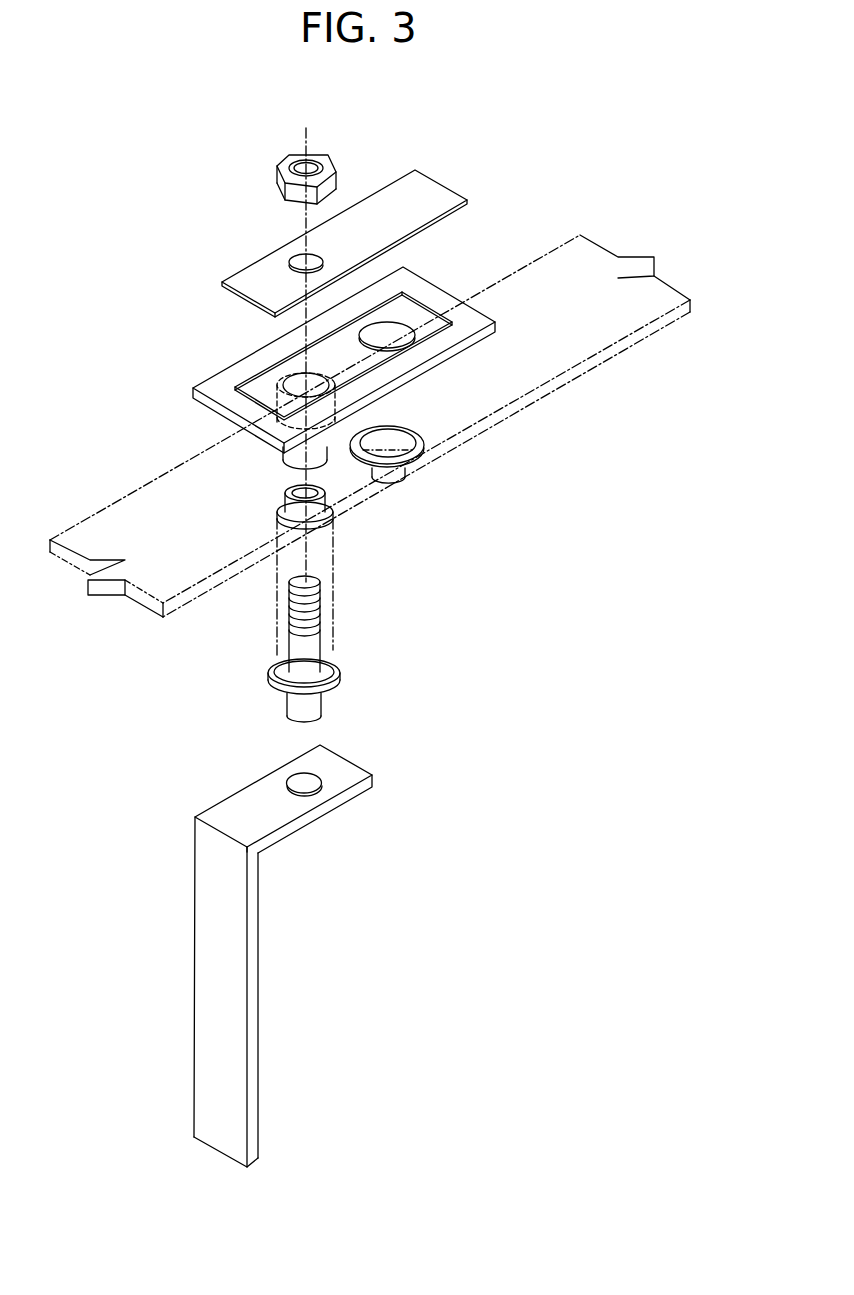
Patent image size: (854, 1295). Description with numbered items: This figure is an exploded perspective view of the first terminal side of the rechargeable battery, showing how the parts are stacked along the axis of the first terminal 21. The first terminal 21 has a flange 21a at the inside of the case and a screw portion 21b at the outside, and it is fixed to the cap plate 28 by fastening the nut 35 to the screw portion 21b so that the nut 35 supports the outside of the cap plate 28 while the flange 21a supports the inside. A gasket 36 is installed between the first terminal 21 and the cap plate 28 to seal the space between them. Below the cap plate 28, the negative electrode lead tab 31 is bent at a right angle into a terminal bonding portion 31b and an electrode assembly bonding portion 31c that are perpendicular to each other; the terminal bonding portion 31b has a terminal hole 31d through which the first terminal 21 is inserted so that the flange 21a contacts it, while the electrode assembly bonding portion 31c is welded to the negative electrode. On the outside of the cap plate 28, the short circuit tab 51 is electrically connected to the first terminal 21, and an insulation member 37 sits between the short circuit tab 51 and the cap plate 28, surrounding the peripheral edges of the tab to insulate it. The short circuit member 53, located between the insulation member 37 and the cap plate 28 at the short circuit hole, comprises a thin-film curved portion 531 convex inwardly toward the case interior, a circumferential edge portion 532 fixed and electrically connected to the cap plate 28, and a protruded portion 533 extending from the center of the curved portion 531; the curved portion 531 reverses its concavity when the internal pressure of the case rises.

The first terminal 21 is at (354, 649).
The flange 21a is at (340, 668).
The screw portion 21b is at (320, 600).
The cap plate 28 is at (607, 363).
The negative electrode lead tab 31 is at (270, 953).
The terminal bonding portion 31b is at (302, 796).
The electrode assembly bonding portion 31c is at (205, 938).
The terminal hole 31d is at (300, 780).
The nut 35 is at (277, 180).
The gasket 36 is at (280, 507).
The insulation member 37 is at (445, 300).
The short circuit tab 51 is at (430, 192).
The short circuit member 53 is at (439, 486).
The curved portion 531 is at (397, 443).
The circumferential edge portion 532 is at (418, 452).
The protruded portion 533 is at (405, 473).